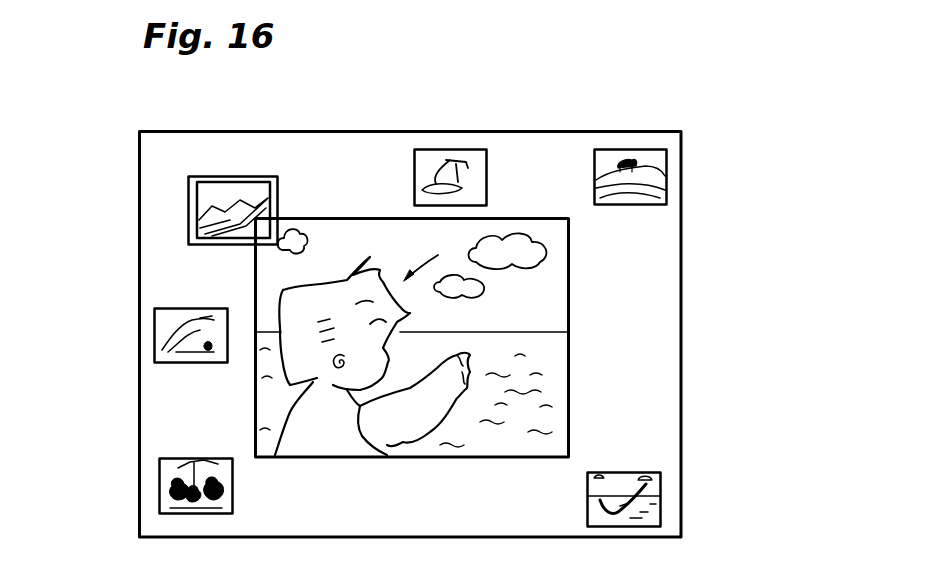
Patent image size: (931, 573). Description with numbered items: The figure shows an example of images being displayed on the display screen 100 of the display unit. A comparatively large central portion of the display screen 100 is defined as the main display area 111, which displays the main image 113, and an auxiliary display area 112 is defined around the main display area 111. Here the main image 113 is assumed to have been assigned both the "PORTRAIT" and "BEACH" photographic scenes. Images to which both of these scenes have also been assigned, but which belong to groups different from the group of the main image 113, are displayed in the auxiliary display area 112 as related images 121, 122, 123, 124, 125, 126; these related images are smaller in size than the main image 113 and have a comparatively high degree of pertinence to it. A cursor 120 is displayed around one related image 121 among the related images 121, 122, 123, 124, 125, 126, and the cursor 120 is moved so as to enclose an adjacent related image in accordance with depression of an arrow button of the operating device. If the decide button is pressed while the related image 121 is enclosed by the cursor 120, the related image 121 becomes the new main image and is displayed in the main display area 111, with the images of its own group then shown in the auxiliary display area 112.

The display screen 100 is at (684, 228).
The main display area 111 is at (548, 305).
The auxiliary display area 112 is at (660, 387).
The main image 113 is at (435, 256).
The cursor 120 is at (282, 192).
The related image 121 is at (195, 214).
The related image 122 is at (455, 148).
The related image 123 is at (637, 148).
The related image 124 is at (586, 498).
The related image 125 is at (158, 490).
The related image 126 is at (153, 340).